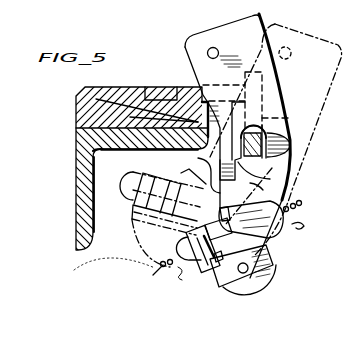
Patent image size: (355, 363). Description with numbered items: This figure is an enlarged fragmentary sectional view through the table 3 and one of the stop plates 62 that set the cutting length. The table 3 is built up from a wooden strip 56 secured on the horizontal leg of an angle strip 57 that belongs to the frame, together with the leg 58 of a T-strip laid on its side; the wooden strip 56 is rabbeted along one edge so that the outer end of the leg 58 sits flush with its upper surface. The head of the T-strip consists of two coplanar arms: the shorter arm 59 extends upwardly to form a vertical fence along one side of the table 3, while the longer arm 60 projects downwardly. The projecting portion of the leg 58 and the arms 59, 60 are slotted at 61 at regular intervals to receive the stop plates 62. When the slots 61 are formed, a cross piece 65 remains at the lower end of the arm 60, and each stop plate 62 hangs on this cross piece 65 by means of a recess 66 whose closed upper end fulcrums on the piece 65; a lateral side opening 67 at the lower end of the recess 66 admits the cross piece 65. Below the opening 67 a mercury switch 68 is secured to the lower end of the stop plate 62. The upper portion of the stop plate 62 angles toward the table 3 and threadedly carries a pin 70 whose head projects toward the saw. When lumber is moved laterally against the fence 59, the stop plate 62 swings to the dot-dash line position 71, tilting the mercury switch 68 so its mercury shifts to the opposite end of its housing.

The table 3 is at (114, 83).
The wooden strip 56 is at (76, 108).
The angle strip 57 is at (78, 191).
The leg of T-strip 58 is at (149, 88).
The slots 61 is at (203, 98).
The pin 70 is at (212, 47).
The stop plate 62 is at (261, 11).
The dot-dash line position 71 is at (308, 24).
The arm of T-strip head 59 is at (264, 85).
The arm of T-strip head 60 is at (290, 118).
The cross piece 65 is at (291, 162).
The recess 66 is at (270, 179).
The lateral side opening 67 is at (189, 169).
The mercury switch 68 is at (283, 250).